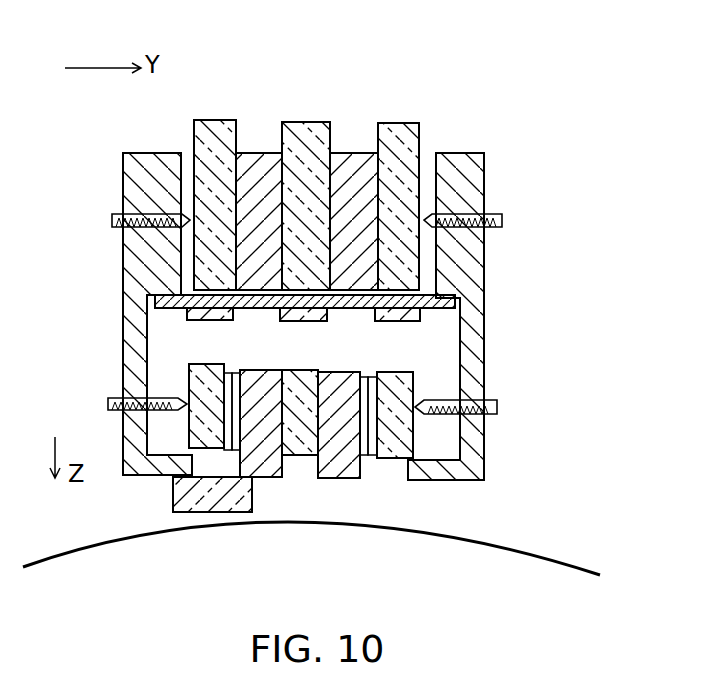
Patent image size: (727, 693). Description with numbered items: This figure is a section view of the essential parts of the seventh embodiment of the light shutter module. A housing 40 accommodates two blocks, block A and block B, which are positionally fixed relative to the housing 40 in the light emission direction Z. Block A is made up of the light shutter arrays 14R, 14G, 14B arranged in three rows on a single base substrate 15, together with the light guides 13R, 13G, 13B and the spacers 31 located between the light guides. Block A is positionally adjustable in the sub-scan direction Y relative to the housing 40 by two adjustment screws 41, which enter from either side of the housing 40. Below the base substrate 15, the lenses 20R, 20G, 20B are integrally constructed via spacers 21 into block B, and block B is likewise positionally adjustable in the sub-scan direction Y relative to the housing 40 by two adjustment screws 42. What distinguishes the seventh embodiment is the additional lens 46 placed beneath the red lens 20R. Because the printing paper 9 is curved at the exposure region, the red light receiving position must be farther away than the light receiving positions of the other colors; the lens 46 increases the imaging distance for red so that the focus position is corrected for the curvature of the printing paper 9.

The printing paper 9 is at (508, 543).
The light guide 13R is at (212, 119).
The light guide 13G is at (308, 122).
The light guide 13B is at (408, 123).
The spacers 31 is at (260, 152).
The base substrate 15 is at (160, 308).
The light shutter array 14R is at (195, 320).
The light shutter array 14G is at (299, 322).
The light shutter array 14B is at (393, 322).
The housing 40 is at (484, 268).
The adjustment screws 41 is at (112, 216).
The adjustment screws 42 is at (107, 403).
The lens 20R is at (189, 430).
The lens 20G is at (303, 455).
The lens 20B is at (398, 458).
The spacers 21 is at (263, 477).
The lens 46 is at (200, 512).
The block A is at (438, 123).
The block B is at (439, 373).